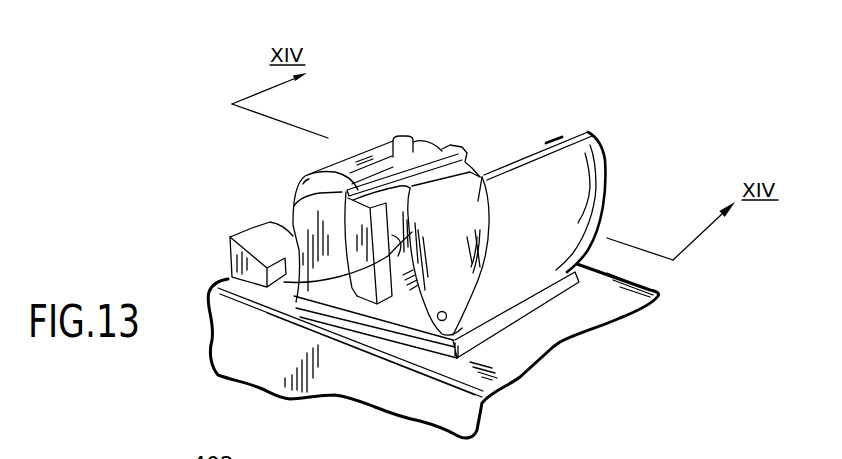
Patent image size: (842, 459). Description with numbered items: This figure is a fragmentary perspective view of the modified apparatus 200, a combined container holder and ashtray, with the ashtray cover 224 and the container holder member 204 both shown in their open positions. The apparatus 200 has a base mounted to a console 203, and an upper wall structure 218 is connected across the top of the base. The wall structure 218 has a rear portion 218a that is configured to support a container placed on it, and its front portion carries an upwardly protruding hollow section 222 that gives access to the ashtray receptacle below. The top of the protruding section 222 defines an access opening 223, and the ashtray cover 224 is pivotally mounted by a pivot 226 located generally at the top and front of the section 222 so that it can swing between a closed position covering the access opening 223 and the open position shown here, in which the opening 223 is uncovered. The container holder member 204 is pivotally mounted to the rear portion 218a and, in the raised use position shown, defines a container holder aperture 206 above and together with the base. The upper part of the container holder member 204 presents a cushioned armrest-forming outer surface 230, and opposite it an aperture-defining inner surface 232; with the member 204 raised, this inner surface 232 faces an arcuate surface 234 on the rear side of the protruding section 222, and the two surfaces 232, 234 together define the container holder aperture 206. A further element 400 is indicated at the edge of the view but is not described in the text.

The modified apparatus 200 is at (665, 88).
The console 203 is at (565, 347).
The container holder member 204 is at (618, 169).
The container holder aperture 206 is at (497, 143).
The upper wall structure 218 is at (322, 309).
The rear portion 218a is at (412, 312).
The upwardly protruding hollow section 222 is at (292, 222).
The access opening 223 is at (413, 152).
The ashtray cover 224 is at (373, 125).
The pivot pin 226 is at (441, 322).
The outer surface 230 is at (564, 234).
The inner surface 232 is at (533, 142).
The arcuate surface 234 is at (232, 278).
The adjacent member 400 is at (677, 458).